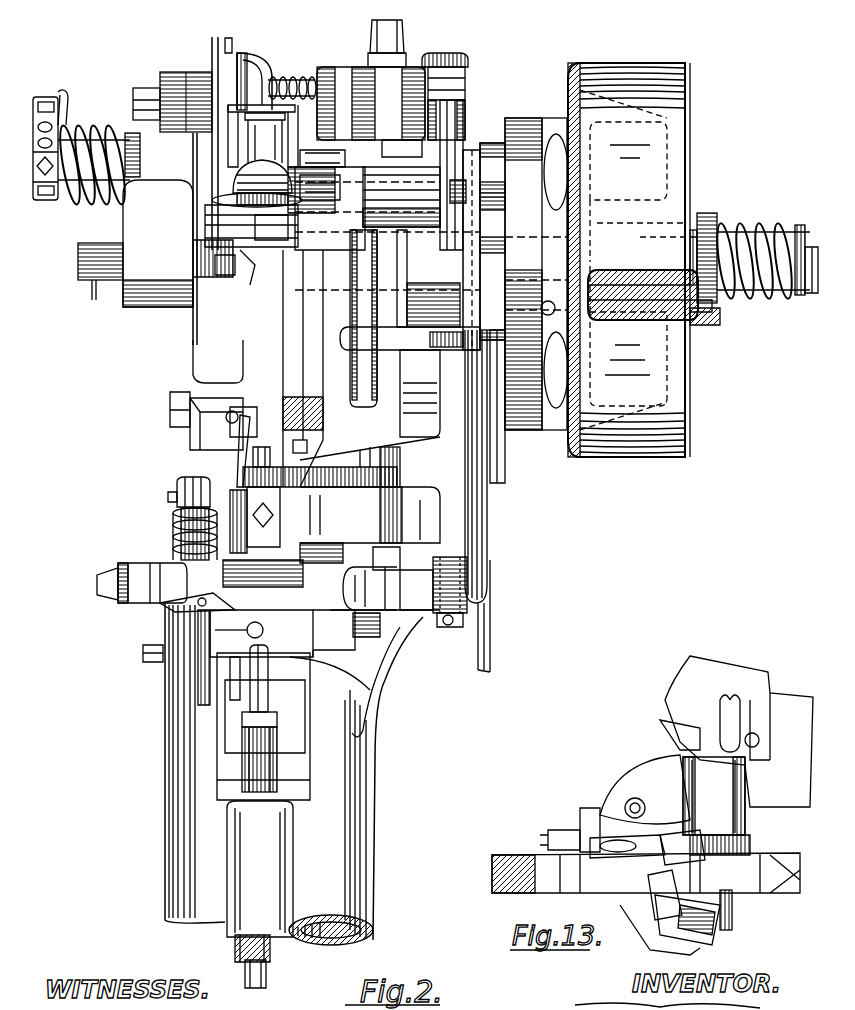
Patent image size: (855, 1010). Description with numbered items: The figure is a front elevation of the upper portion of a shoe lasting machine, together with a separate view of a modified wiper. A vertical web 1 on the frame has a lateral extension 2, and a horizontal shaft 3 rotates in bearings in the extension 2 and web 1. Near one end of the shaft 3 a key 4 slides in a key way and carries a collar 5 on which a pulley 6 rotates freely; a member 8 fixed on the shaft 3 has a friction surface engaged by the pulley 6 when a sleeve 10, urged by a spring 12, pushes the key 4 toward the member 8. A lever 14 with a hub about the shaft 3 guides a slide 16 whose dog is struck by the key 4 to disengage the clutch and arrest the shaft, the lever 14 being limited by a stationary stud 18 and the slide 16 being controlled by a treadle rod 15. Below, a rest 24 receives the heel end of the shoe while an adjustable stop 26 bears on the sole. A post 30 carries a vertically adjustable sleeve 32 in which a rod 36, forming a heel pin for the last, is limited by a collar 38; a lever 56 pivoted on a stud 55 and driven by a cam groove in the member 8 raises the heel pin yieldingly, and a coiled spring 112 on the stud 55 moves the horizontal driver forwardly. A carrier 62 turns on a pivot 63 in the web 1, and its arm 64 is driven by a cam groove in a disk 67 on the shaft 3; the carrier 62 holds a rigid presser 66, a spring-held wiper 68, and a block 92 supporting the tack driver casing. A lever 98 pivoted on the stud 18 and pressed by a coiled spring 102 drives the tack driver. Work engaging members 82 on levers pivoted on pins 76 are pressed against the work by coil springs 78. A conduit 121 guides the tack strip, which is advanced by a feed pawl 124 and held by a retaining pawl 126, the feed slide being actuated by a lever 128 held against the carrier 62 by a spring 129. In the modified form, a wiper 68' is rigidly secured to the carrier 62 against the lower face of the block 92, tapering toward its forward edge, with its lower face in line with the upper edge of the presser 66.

In FIG. 2, the vertical web 1 is at (345, 379).
In FIG. 2, the lateral extension 2 is at (135, 300).
In FIG. 2, the horizontal shaft 3 is at (82, 280).
In FIG. 2, the key 4 is at (698, 312).
In FIG. 2, the collar 5 is at (702, 318).
In FIG. 2, the pulley 6 is at (690, 322).
In FIG. 2, the member 8 is at (520, 118).
In FIG. 2, the sleeve 10 is at (718, 225).
In FIG. 2, the spring 12 is at (748, 230).
In FIG. 2, the lever 14 is at (440, 245).
In FIG. 2, the treadle rod 15 is at (490, 638).
In FIG. 2, the slide 16 is at (497, 473).
In FIG. 2, the stud 18 is at (143, 90).
In FIG. 2, the rest 24 is at (290, 630).
In FIG. 2, the stop 26 is at (260, 503).
In FIG. 2, the post 30 is at (293, 860).
In FIG. 2, the sleeve 32 is at (233, 947).
In FIG. 2, the rod 36 is at (273, 972).
In FIG. 2, the collar 38 is at (280, 720).
In FIG. 2, the stud 55 is at (85, 200).
In FIG. 2, the lever 56 is at (490, 142).
In FIG. 2, the carrier 62 is at (338, 197).
In FIG. 13, the carrier 62 is at (618, 775).
In FIG. 2, the pivot 63 is at (250, 283).
In FIG. 2, the arm 64 is at (358, 62).
In FIG. 13, the presser 66 is at (670, 845).
In FIG. 2, the disk 67 is at (320, 160).
In FIG. 2, the wiper 68 is at (332, 626).
In FIG. 13, the wiper 68' is at (739, 745).
In FIG. 2, the pins 76 is at (176, 482).
In FIG. 2, the coil springs 78 is at (170, 510).
In FIG. 2, the work engaging member 82 is at (160, 577).
In FIG. 13, the block 92 is at (688, 770).
In FIG. 2, the lever 98 is at (250, 56).
In FIG. 2, the coiled spring 102 is at (290, 78).
In FIG. 2, the coiled spring 112 is at (80, 125).
In FIG. 13, the conduit 121 is at (668, 918).
In FIG. 2, the feed pawl 124 is at (183, 612).
In FIG. 2, the retaining pawl 126 is at (230, 702).
In FIG. 2, the lever 128 is at (490, 528).
In FIG. 2, the spring 129 is at (469, 597).